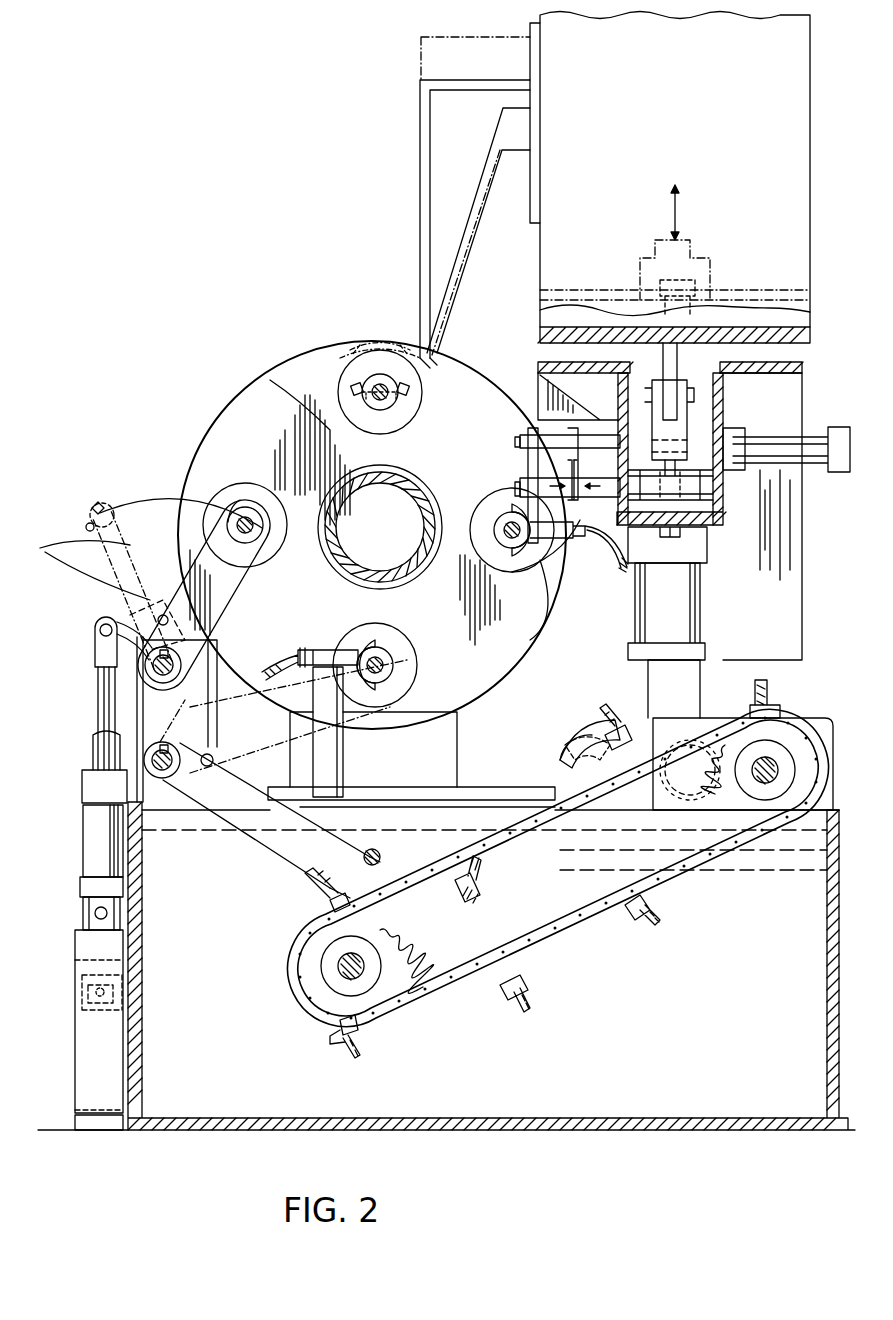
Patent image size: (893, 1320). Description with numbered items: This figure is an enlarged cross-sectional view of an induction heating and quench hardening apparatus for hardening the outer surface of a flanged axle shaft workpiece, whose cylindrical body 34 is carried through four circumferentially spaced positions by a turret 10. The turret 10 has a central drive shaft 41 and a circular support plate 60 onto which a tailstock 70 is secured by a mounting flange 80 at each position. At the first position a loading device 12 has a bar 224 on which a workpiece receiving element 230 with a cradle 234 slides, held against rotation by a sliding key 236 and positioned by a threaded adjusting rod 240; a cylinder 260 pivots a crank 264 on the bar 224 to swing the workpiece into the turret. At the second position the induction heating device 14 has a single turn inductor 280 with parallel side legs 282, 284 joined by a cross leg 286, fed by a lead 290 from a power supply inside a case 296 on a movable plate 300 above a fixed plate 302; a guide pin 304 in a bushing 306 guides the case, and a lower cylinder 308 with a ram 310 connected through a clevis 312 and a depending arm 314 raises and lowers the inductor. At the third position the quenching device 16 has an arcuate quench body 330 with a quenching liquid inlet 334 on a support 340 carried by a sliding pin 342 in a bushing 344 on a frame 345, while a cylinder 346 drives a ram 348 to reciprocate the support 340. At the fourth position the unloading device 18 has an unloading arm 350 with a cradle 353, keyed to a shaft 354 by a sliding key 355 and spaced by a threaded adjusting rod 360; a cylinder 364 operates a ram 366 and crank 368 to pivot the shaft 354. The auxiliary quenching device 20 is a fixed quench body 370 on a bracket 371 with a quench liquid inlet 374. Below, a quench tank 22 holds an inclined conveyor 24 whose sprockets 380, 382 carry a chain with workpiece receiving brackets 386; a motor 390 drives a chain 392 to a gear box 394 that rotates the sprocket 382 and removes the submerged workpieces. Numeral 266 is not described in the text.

The turret 10 is at (250, 383).
The loading device 12 is at (86, 553).
The induction heating device 14 is at (415, 228).
The quenching device 16 is at (518, 445).
The unloading device 18 is at (295, 862).
The auxiliary quenching device 20 is at (365, 635).
The quench tank 22 is at (160, 1055).
The inclined conveyor 24 is at (565, 940).
The cylindrical body 34 is at (500, 528).
The central drive shaft 41 is at (410, 485).
The circular support plate 60 is at (222, 415).
The tailstock 70 is at (350, 420).
The mounting flange 80 is at (345, 397).
The bar 224 is at (150, 668).
The workpiece receiving element 230 is at (215, 585).
The cradle 234 is at (258, 540).
The sliding key 236 is at (158, 655).
The threaded adjusting rod 240 is at (150, 625).
The cylinder 260 is at (90, 828).
The crank 264 is at (108, 618).
The piston rod 266 is at (100, 708).
The single turn inductor 280 is at (360, 328).
The side leg 282 is at (350, 385).
The side leg 284 is at (410, 394).
The cross leg 286 is at (410, 386).
The lead 290 is at (425, 360).
The case 296 is at (790, 58).
The movable plate 300 is at (568, 318).
The fixed plate 302 is at (790, 368).
The guide pin 304 is at (690, 238).
The bushing 306 is at (718, 290).
The lower cylinder 308 is at (690, 600).
The ram 310 is at (690, 460).
The clevis 312 is at (690, 412).
The depending arm 314 is at (715, 338).
The quench body 330 is at (522, 555).
The quenching liquid inlet 334 is at (548, 570).
The support 340 is at (528, 470).
The sliding pin 342 is at (612, 564).
The bushing 344 is at (705, 525).
The frame 345 is at (700, 545).
The cylinder 346 is at (815, 435).
The ram 348 is at (608, 440).
The unloading arm 350 is at (262, 830).
The cradle 353 is at (385, 865).
The shaft 354 is at (162, 780).
The sliding key 355 is at (160, 745).
The threaded adjusting rod 360 is at (210, 768).
The cylinder 364 is at (85, 912).
The ram 366 is at (90, 770).
The crank 368 is at (120, 748).
The quench body 370 is at (380, 645).
The bracket 371 is at (345, 752).
The quench liquid inlet 374 is at (320, 648).
The sprocket 380 is at (390, 948).
The sprocket 382 is at (748, 805).
The workpiece receiving bracket 386 is at (468, 790).
The motor 390 is at (585, 752).
The chain 392 is at (563, 770).
The gear box 394 is at (698, 716).